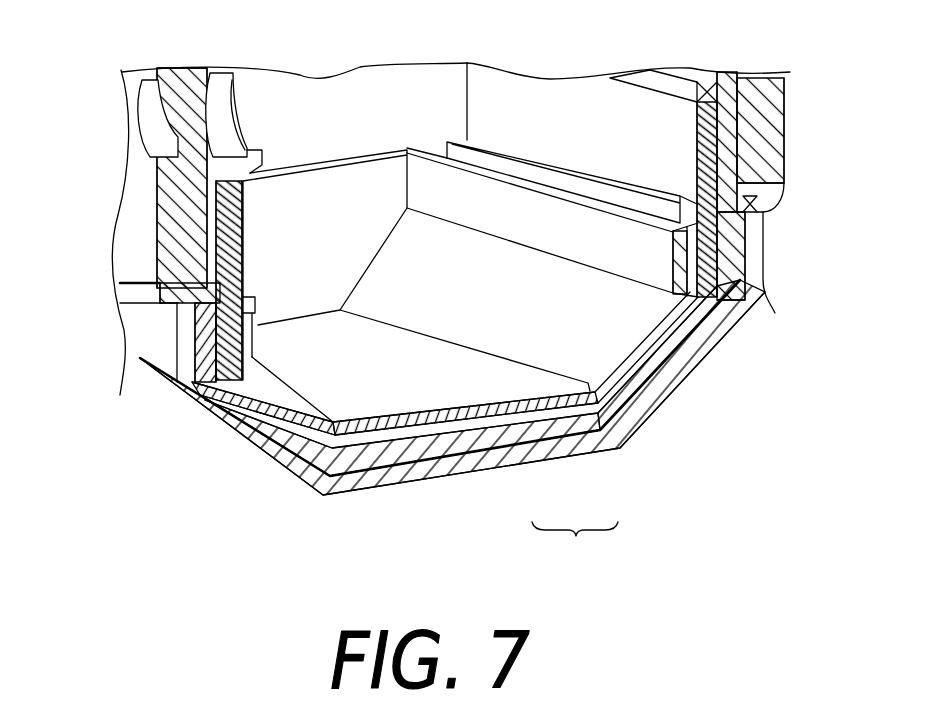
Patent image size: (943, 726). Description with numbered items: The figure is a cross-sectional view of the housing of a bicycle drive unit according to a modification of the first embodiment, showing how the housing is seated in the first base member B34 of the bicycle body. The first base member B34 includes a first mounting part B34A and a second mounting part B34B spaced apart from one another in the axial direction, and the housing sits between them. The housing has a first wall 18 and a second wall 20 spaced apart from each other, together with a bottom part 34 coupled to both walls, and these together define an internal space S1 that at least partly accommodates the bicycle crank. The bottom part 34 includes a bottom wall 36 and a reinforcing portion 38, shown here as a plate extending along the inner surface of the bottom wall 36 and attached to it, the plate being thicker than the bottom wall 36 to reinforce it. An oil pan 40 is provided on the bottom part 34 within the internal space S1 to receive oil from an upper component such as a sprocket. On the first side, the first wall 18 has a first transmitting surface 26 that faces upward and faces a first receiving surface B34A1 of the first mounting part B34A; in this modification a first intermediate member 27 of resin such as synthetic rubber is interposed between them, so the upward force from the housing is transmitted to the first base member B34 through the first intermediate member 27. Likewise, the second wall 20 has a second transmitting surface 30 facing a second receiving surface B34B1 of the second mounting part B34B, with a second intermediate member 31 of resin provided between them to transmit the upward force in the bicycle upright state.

The internal space S1 is at (382, 95).
The oil pan 40 is at (582, 353).
The second wall 20 is at (723, 100).
The first wall 18 is at (154, 221).
The first transmitting surface 26 is at (150, 283).
The first intermediate member 27 is at (150, 305).
The second transmitting surface 30 is at (752, 183).
The second intermediate member 31 is at (760, 207).
The bottom part 34 is at (575, 542).
The bottom wall 36 is at (534, 454).
The reinforcing portion 38 is at (584, 425).
The first base member B34 is at (121, 123).
The first mounting part B34A is at (143, 187).
The first receiving surface B34A1 is at (177, 315).
The second mounting part B34B is at (765, 137).
The second receiving surface B34B1 is at (768, 296).